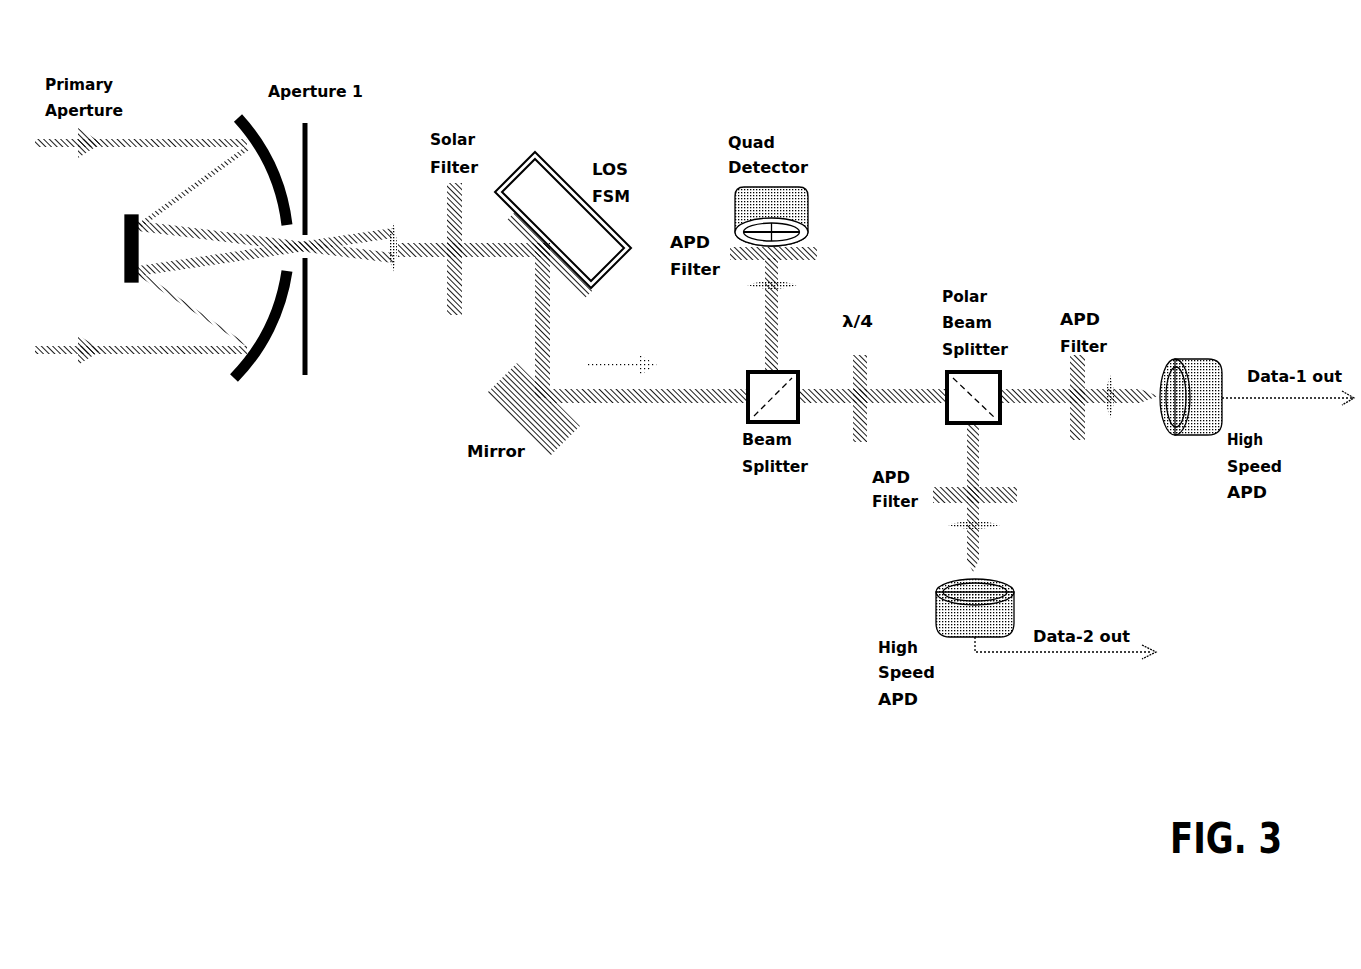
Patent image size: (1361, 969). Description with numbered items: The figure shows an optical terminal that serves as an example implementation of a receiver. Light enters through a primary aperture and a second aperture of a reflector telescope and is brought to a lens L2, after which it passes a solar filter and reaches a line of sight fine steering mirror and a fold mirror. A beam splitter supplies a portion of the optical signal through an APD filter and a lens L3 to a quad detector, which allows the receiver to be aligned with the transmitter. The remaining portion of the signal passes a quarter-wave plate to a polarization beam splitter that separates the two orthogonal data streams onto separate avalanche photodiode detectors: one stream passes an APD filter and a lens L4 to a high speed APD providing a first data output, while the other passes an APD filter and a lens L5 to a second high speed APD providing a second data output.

The lens L2 is at (391, 227).
The lens L3 is at (761, 295).
The lens L4 is at (1111, 409).
The lens L5 is at (992, 527).